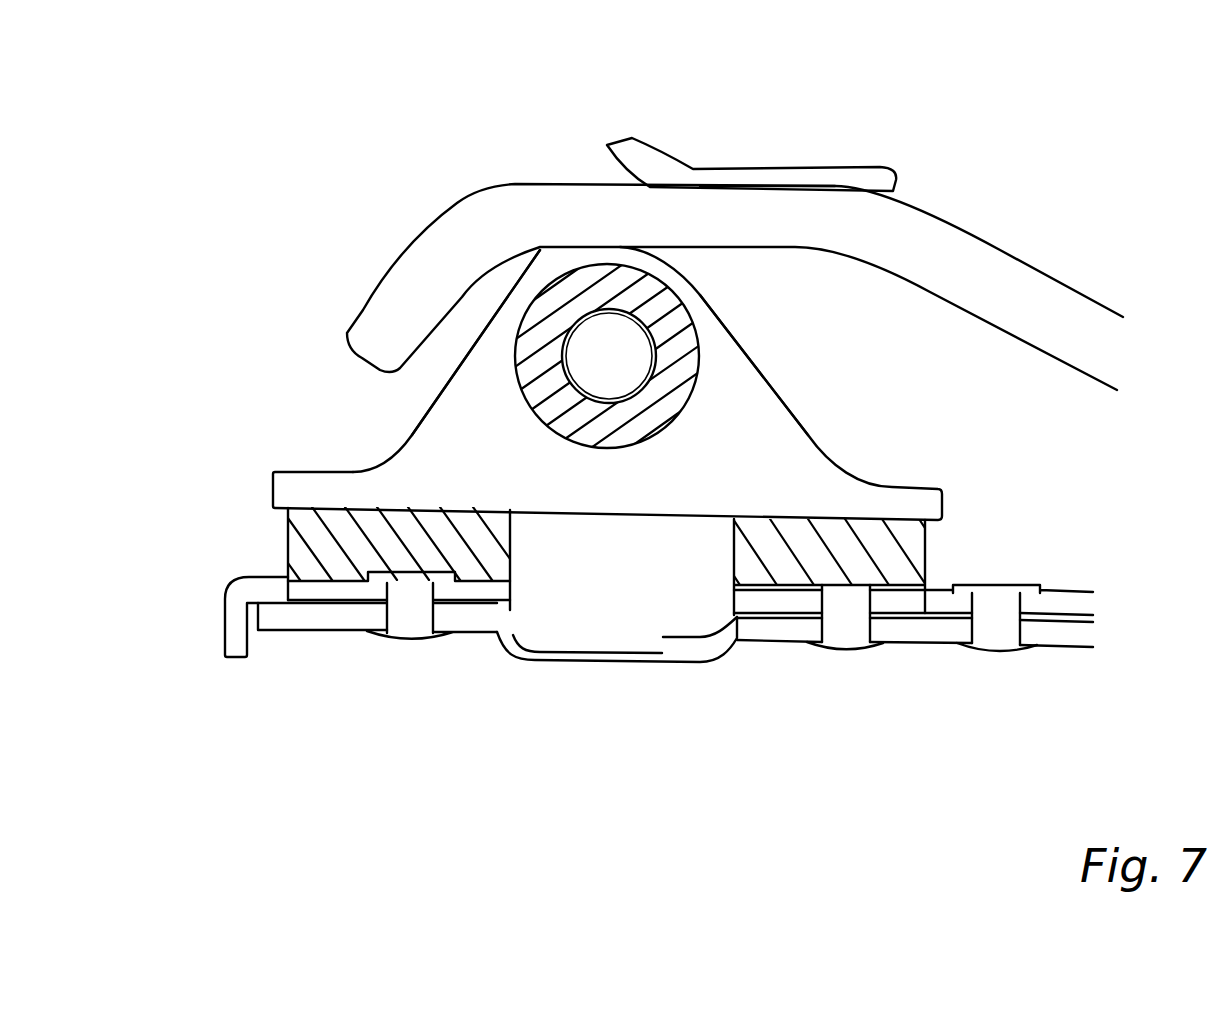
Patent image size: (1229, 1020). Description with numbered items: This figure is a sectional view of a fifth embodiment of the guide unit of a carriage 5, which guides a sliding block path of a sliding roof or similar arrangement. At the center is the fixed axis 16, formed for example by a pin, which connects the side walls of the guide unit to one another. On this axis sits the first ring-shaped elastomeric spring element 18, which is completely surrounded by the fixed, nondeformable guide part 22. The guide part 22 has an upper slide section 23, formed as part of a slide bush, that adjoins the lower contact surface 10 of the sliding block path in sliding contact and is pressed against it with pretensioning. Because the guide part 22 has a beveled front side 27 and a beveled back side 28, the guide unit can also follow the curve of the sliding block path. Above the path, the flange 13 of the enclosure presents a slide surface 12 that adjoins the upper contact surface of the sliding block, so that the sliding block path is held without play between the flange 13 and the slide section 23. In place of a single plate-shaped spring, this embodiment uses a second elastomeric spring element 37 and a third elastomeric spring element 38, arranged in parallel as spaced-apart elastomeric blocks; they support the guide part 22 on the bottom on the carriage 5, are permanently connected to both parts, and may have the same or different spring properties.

The carriage 5 is at (473, 622).
The lower contact surface 10 is at (756, 256).
The slide surface 12 is at (822, 196).
The flange 13 is at (775, 182).
The fixed axis 16 is at (602, 367).
The first ring-shaped elastomeric spring element 18 is at (542, 333).
The guide part 22 is at (425, 402).
The upper slide section 23 is at (600, 266).
The beveled front side 27 is at (813, 445).
The beveled back side 28 is at (408, 433).
The second elastomeric spring element 37 is at (353, 540).
The third elastomeric spring element 38 is at (817, 553).